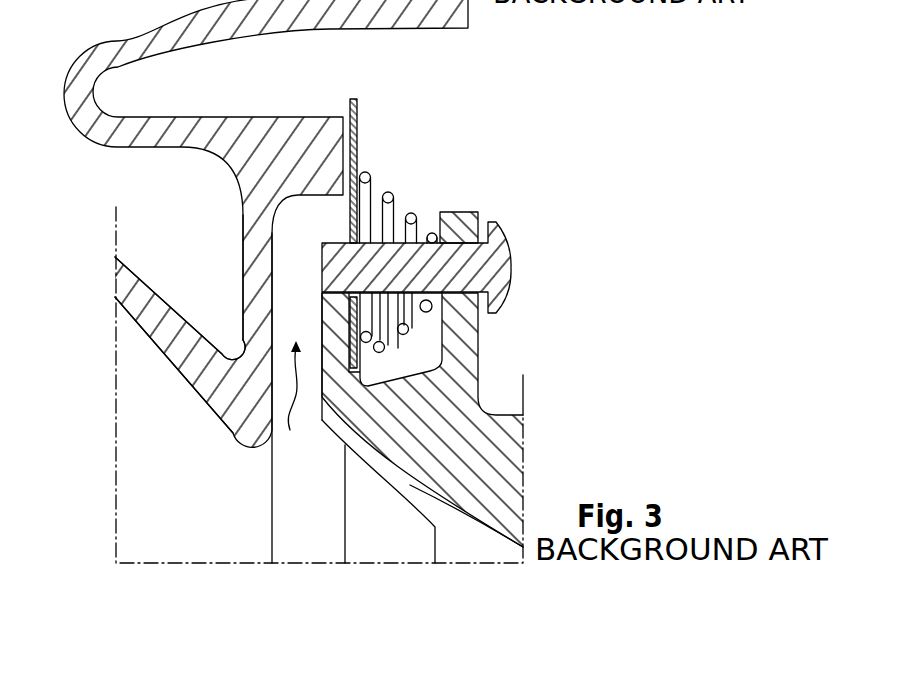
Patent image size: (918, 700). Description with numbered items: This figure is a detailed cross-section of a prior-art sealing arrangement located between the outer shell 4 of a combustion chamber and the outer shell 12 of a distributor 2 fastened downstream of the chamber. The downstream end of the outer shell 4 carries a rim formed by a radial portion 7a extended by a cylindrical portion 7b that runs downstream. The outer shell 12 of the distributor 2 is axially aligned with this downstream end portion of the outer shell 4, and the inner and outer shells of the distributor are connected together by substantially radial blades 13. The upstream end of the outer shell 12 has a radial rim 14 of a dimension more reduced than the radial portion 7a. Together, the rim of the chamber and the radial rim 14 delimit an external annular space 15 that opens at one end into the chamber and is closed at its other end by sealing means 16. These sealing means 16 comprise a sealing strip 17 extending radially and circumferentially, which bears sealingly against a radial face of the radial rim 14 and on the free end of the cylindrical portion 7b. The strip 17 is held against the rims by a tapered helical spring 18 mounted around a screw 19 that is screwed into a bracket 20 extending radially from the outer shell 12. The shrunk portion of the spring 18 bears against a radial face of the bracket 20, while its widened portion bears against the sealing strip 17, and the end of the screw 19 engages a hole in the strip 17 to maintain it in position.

The distributor 2 is at (572, 368).
The outer shell 4 is at (157, 323).
The radial portion 7a is at (257, 272).
The cylindrical portion 7b is at (300, 145).
The outer shell 12 is at (508, 470).
The radial blades 13 is at (465, 547).
The radial rim 14 is at (340, 338).
The external annular space 15 is at (294, 396).
The sealing means 16 is at (456, 148).
The sealing strip 17 is at (362, 120).
The helical spring 18 is at (388, 192).
The screw 19 is at (458, 270).
The bracket 20 is at (460, 225).